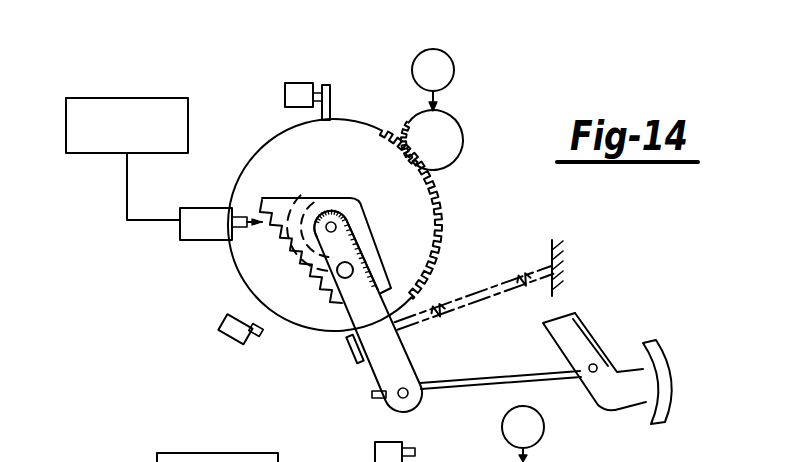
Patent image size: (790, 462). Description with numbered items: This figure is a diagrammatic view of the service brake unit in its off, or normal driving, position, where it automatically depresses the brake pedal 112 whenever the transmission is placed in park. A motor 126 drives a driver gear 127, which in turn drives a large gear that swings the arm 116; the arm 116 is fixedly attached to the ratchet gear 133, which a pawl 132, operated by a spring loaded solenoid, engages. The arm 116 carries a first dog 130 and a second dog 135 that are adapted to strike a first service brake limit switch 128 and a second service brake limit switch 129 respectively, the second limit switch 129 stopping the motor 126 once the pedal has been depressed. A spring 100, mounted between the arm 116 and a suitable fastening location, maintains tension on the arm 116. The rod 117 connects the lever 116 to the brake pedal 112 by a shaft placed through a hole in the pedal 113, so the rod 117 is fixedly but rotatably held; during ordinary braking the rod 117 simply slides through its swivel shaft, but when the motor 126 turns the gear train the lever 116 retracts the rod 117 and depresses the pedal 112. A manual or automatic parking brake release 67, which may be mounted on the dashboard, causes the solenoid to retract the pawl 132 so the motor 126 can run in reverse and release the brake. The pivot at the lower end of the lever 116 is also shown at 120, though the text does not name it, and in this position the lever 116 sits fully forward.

The parking brake release 67 is at (137, 98).
The spring 100 is at (436, 328).
The brake pedal 112 is at (571, 328).
The hole in the pedal 113 is at (597, 364).
The arm 116 is at (383, 318).
The rod 117 is at (457, 392).
The lever pivot pin 120 is at (389, 398).
The motor 126 is at (455, 72).
The driver gear 127 is at (460, 163).
The first service brake limit switch 128 is at (338, 30).
The second service brake limit switch 129 is at (220, 336).
The first dog 130 is at (331, 93).
The pawl 132 is at (236, 257).
The ratchet gear 133 is at (332, 226).
The second dog 135 is at (350, 352).